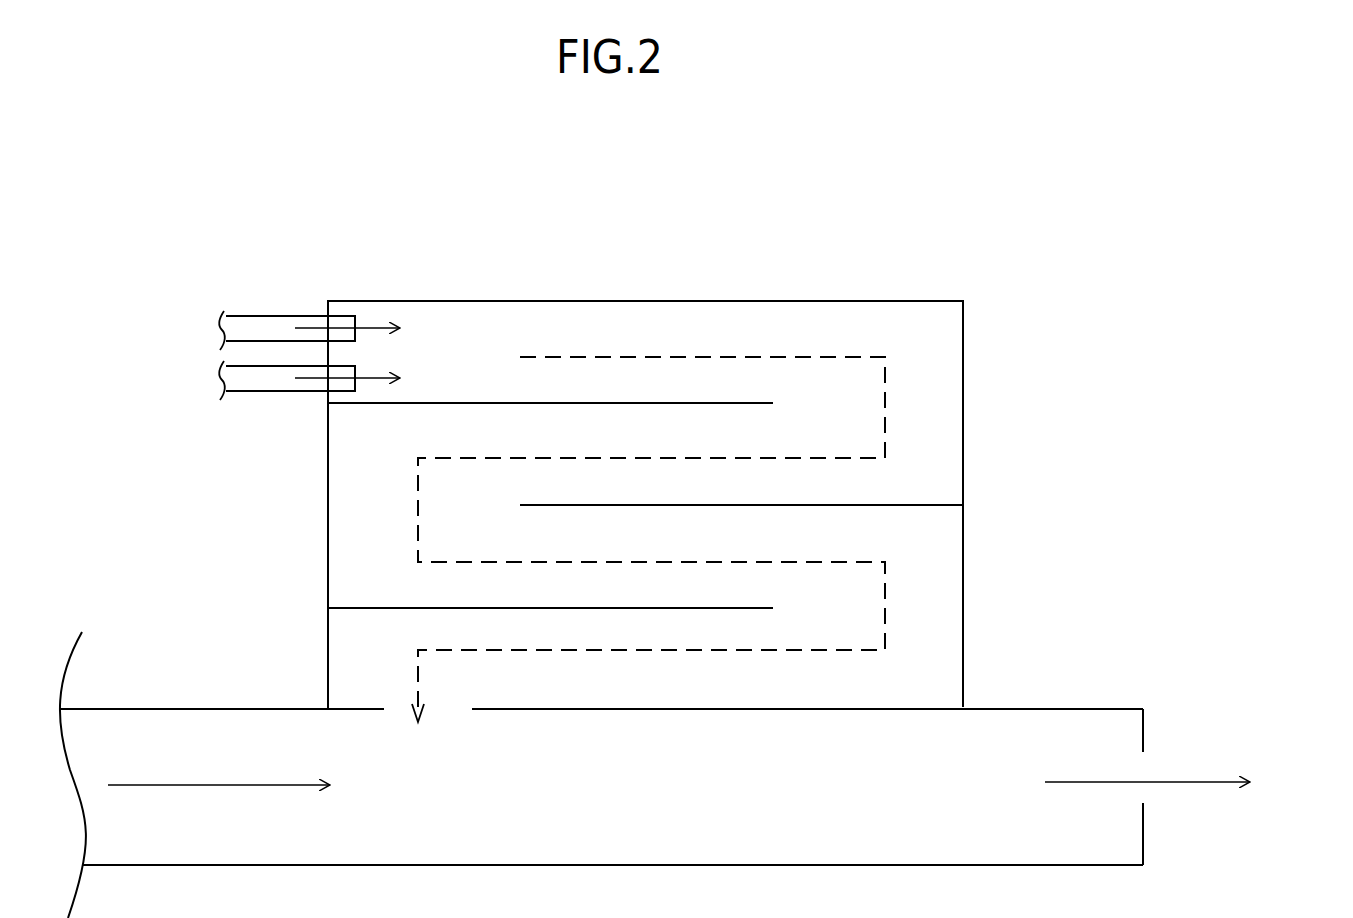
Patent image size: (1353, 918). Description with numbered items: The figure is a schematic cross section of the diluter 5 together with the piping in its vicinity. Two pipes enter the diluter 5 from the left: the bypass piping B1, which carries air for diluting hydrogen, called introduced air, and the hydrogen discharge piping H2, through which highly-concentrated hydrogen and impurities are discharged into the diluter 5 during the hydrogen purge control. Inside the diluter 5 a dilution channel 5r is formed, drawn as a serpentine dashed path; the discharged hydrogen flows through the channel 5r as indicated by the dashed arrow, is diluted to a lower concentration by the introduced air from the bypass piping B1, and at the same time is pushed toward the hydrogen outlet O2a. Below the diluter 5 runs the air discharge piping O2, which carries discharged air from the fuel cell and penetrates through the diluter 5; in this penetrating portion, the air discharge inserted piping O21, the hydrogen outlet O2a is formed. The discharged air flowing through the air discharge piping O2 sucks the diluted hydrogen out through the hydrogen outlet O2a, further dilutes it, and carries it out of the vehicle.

The diluter 5 is at (656, 301).
The dilution channel 5r is at (952, 464).
The bypass piping B1 is at (262, 316).
The hydrogen discharge piping H2 is at (270, 393).
The air discharge piping O2 is at (120, 708).
The hydrogen outlet O2a is at (447, 708).
The air discharge inserted piping O21 is at (853, 707).